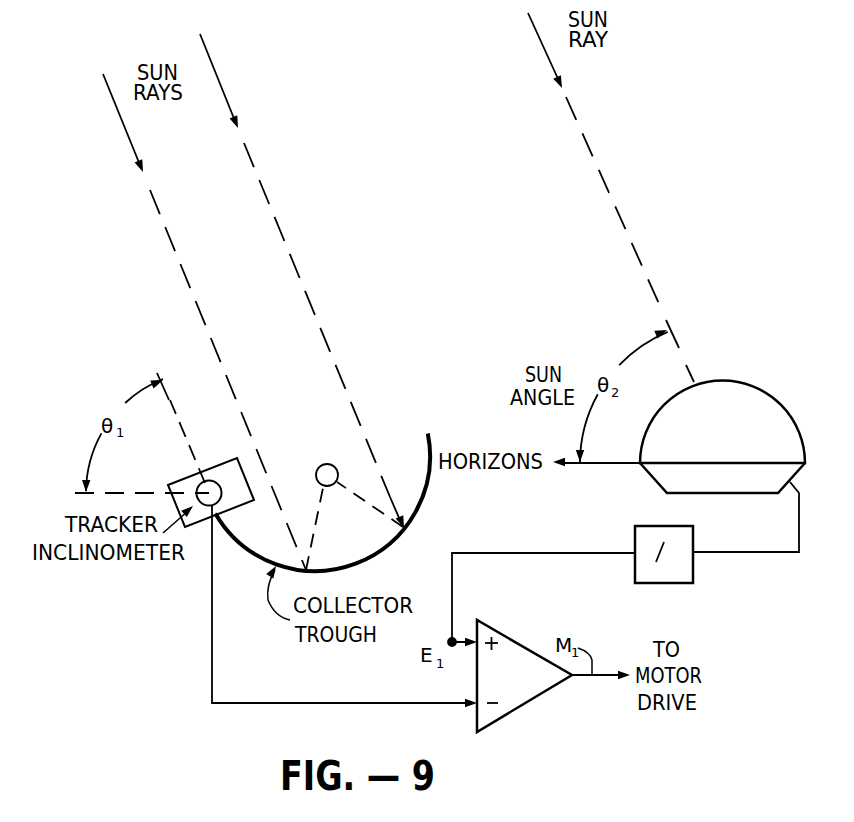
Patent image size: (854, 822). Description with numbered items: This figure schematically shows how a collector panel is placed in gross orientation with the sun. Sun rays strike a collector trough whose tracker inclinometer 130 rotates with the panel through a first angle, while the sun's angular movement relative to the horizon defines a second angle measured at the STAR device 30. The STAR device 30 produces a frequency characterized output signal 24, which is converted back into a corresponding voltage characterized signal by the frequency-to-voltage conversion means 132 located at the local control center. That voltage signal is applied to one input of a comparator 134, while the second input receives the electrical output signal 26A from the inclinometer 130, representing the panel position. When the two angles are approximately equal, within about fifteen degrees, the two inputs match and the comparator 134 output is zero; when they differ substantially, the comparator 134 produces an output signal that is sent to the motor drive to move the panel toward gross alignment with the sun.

The STAR device 30 is at (730, 372).
The frequency-to-voltage conversion means 132 is at (638, 526).
The frequency characterized output signal 24 is at (759, 552).
The inclinometer 130 is at (204, 508).
The electrical output signal of the inclinometer 26A is at (280, 703).
The comparator 134 is at (510, 700).